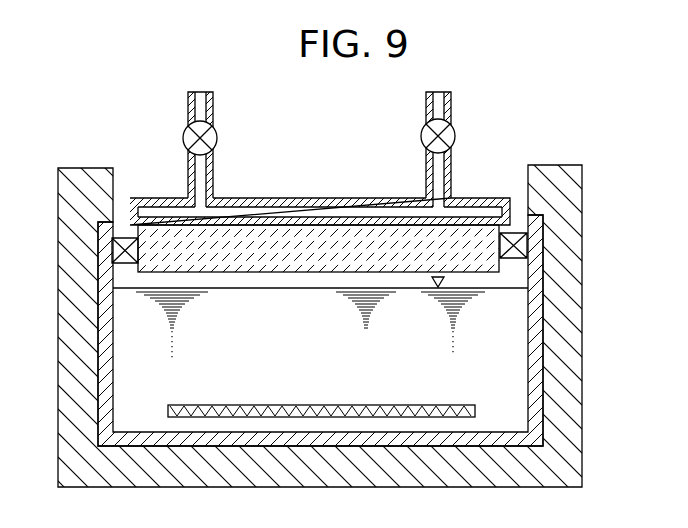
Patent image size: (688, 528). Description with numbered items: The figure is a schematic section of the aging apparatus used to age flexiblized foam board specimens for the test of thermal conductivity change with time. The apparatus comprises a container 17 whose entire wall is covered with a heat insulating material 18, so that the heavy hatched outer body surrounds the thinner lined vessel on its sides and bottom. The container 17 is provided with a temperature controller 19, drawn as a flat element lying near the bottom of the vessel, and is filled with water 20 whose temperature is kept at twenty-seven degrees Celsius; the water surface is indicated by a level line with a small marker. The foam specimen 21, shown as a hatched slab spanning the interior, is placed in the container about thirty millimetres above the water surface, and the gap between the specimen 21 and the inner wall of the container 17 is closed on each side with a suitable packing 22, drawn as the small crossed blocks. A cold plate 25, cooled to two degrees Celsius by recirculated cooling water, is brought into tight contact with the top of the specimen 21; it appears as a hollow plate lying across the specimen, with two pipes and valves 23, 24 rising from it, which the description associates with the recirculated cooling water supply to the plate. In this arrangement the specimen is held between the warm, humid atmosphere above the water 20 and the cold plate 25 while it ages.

The container 17 is at (533, 263).
The heat insulating material 18 is at (582, 357).
The temperature controller 19 is at (263, 405).
The water 20 is at (130, 331).
The specimen 21 is at (463, 240).
The packing 22 is at (122, 237).
The gas outlet pipe with valve 23 is at (437, 93).
The gas inlet pipe with valve 24 is at (200, 93).
The cold plate 25 is at (287, 222).